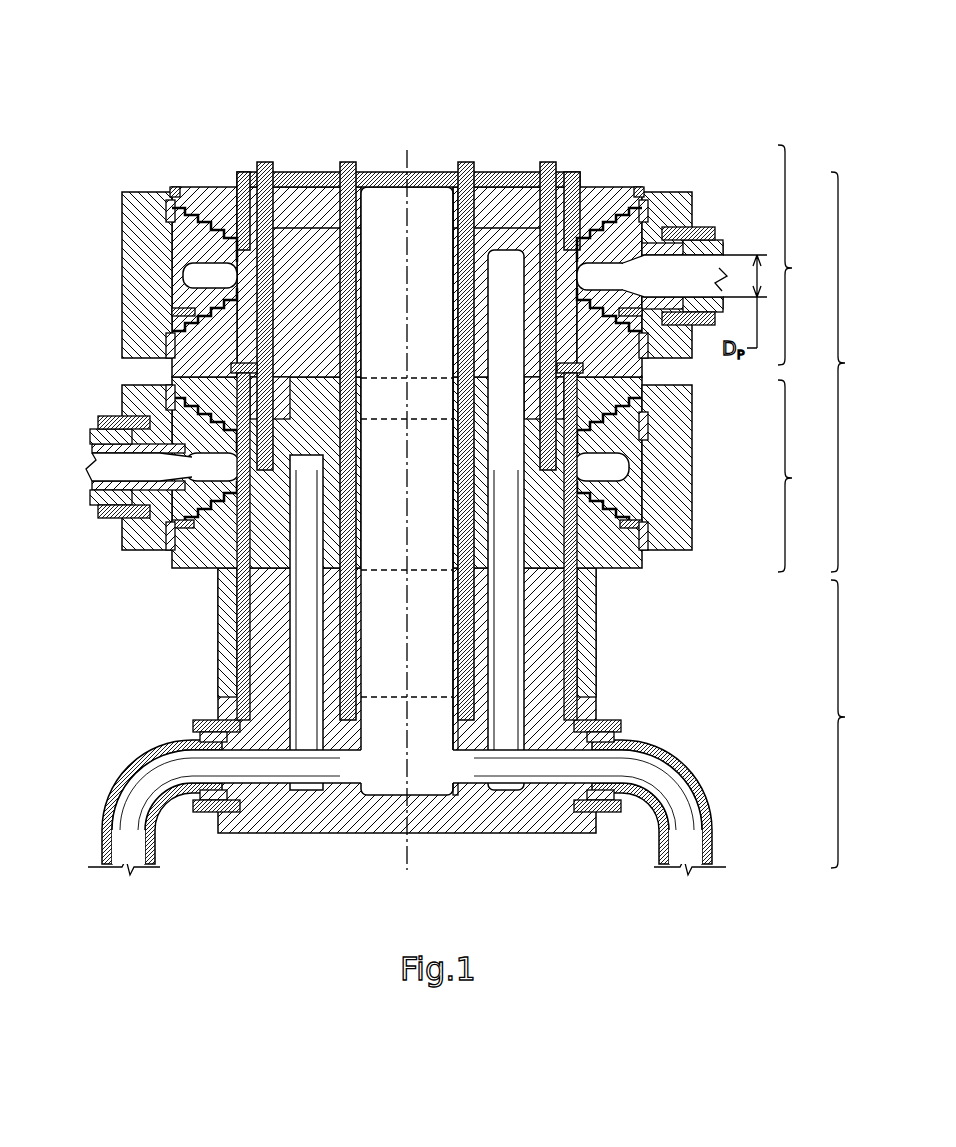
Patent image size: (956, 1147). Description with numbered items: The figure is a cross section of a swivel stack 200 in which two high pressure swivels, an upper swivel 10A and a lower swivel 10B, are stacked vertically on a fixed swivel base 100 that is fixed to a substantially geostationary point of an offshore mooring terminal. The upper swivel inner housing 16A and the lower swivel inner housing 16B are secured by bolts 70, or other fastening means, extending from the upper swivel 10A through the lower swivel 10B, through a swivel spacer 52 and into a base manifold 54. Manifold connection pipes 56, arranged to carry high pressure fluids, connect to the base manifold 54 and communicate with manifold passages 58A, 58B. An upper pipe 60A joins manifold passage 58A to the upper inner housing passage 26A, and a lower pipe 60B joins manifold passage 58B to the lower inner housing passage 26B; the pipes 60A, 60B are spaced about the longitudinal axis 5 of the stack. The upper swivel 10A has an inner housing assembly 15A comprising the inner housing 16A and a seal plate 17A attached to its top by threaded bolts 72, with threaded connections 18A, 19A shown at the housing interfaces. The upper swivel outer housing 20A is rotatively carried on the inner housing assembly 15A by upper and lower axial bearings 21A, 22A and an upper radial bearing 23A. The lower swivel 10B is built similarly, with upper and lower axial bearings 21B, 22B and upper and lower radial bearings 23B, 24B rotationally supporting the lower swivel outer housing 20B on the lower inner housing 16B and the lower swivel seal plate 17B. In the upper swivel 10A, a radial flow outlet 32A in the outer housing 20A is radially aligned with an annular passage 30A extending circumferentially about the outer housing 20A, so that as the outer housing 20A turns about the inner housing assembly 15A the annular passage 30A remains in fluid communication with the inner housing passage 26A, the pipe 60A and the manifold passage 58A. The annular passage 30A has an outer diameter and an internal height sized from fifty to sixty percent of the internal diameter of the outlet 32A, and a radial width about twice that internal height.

The longitudinal axis 5 is at (443, 215).
The upper swivel inner housing assembly 15A is at (455, 245).
The upper swivel inner housing 16A is at (247, 275).
The lower swivel inner housing 16B is at (610, 557).
The seal plate 17A is at (212, 190).
The lower swivel seal plate 17B is at (645, 388).
The threaded connection 18A is at (200, 250).
The threaded connection 19A is at (217, 297).
The upper swivel outer housing 20A is at (147, 195).
The lower swivel outer housing 20B is at (660, 470).
The upper swivel upper axial bearing 21A is at (177, 187).
The lower swivel upper axial bearing 21B is at (638, 422).
The upper swivel lower axial bearing 22A is at (180, 313).
The lower swivel lower axial bearing 22B is at (190, 527).
The upper swivel upper radial bearing 23A is at (168, 205).
The lower swivel upper radial bearing 23B is at (167, 395).
The lower swivel lower radial bearing 24B is at (167, 540).
The upper inner housing passage 26A is at (508, 243).
The lower inner housing passage 26B is at (253, 470).
The annular passage 30A is at (217, 280).
The radial flow outlet 32A is at (713, 263).
The swivel spacer 52 is at (590, 617).
The base manifold 54 is at (587, 710).
The manifold connection pipes 56 is at (190, 740).
The manifold passage 58A is at (597, 770).
The manifold passage 58B is at (230, 765).
The upper pipe 60A is at (530, 630).
The lower pipe 60B is at (290, 657).
The bolts 70 is at (348, 162).
The threaded bolts 72 is at (247, 177).
The upper swivel 10A is at (806, 255).
The lower swivel 10B is at (806, 476).
The swivel base 100 is at (861, 724).
The swivel stack 200 is at (858, 372).